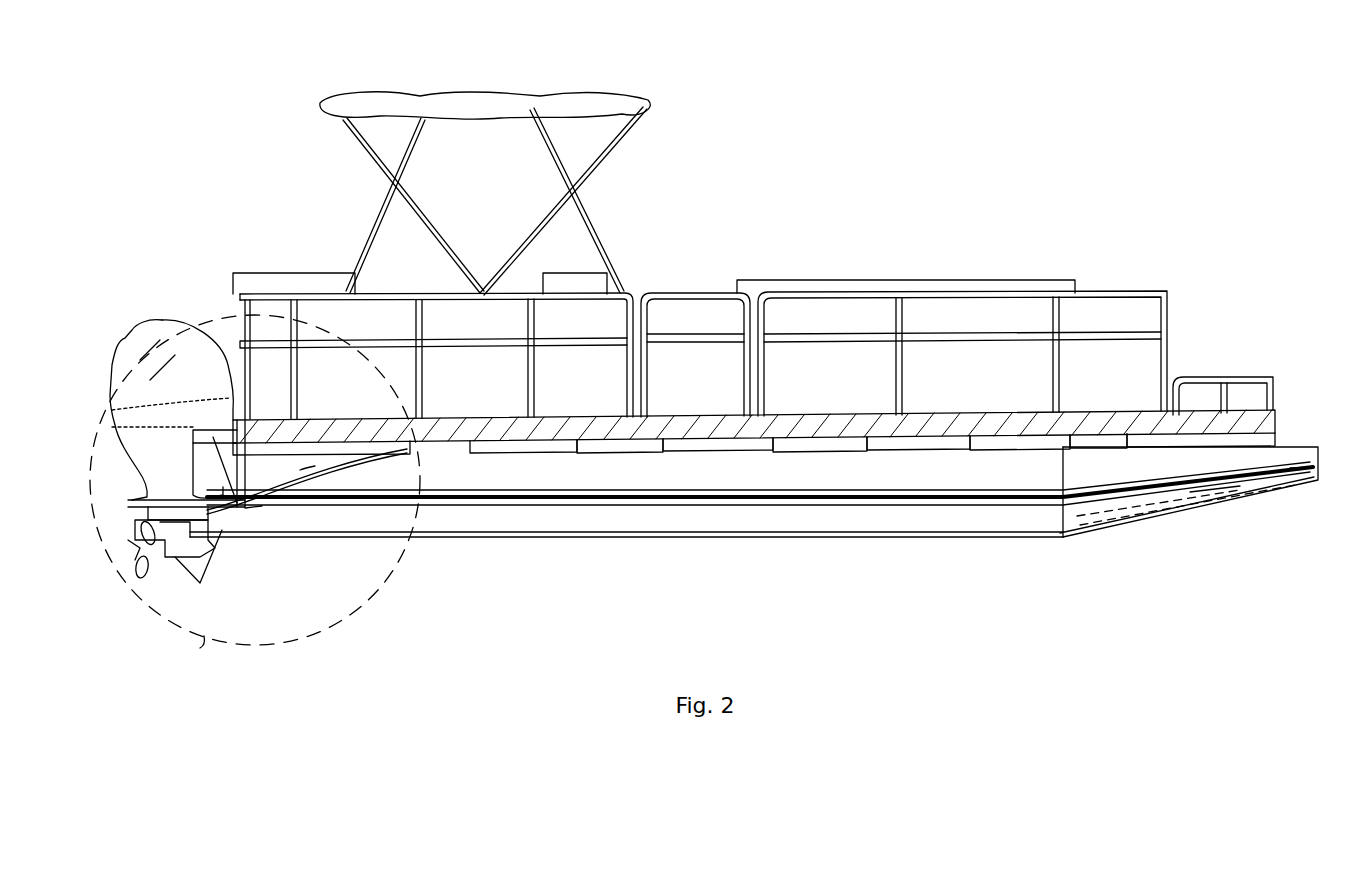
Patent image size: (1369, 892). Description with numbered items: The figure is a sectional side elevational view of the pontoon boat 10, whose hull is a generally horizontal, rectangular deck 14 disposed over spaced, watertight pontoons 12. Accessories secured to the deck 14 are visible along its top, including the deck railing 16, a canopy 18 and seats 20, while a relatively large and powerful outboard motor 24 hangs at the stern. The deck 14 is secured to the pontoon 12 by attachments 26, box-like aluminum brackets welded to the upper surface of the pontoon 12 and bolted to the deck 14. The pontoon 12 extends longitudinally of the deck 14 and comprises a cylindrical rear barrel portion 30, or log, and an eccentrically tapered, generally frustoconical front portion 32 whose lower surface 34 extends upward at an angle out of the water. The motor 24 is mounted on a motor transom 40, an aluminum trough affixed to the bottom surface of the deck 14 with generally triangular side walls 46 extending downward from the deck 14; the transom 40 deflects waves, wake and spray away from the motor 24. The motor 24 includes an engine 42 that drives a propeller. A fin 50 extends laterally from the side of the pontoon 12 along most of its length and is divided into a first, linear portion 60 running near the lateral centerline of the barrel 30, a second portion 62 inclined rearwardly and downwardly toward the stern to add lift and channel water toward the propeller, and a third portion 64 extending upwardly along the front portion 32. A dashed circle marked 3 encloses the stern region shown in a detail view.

The pontoon boat 10 is at (1070, 151).
The pontoon 12 is at (739, 526).
The deck 14 is at (1152, 426).
The deck railing 16 is at (1100, 293).
The canopy 18 is at (618, 108).
The seats 20 is at (580, 287).
The outboard motor 24 is at (151, 421).
The attachments 26 is at (1237, 441).
The rear barrel portion 30 is at (510, 488).
The front portion 32 is at (1163, 502).
The lower surface 34 is at (1213, 503).
The motor transom 40 is at (270, 483).
The engine 42 is at (122, 359).
The side walls 46 is at (258, 515).
The fin 50 is at (874, 505).
The first portion 60 is at (832, 493).
The second portion 62 is at (227, 512).
The third portion 64 is at (1285, 470).
The detail view indicator 3 is at (200, 648).